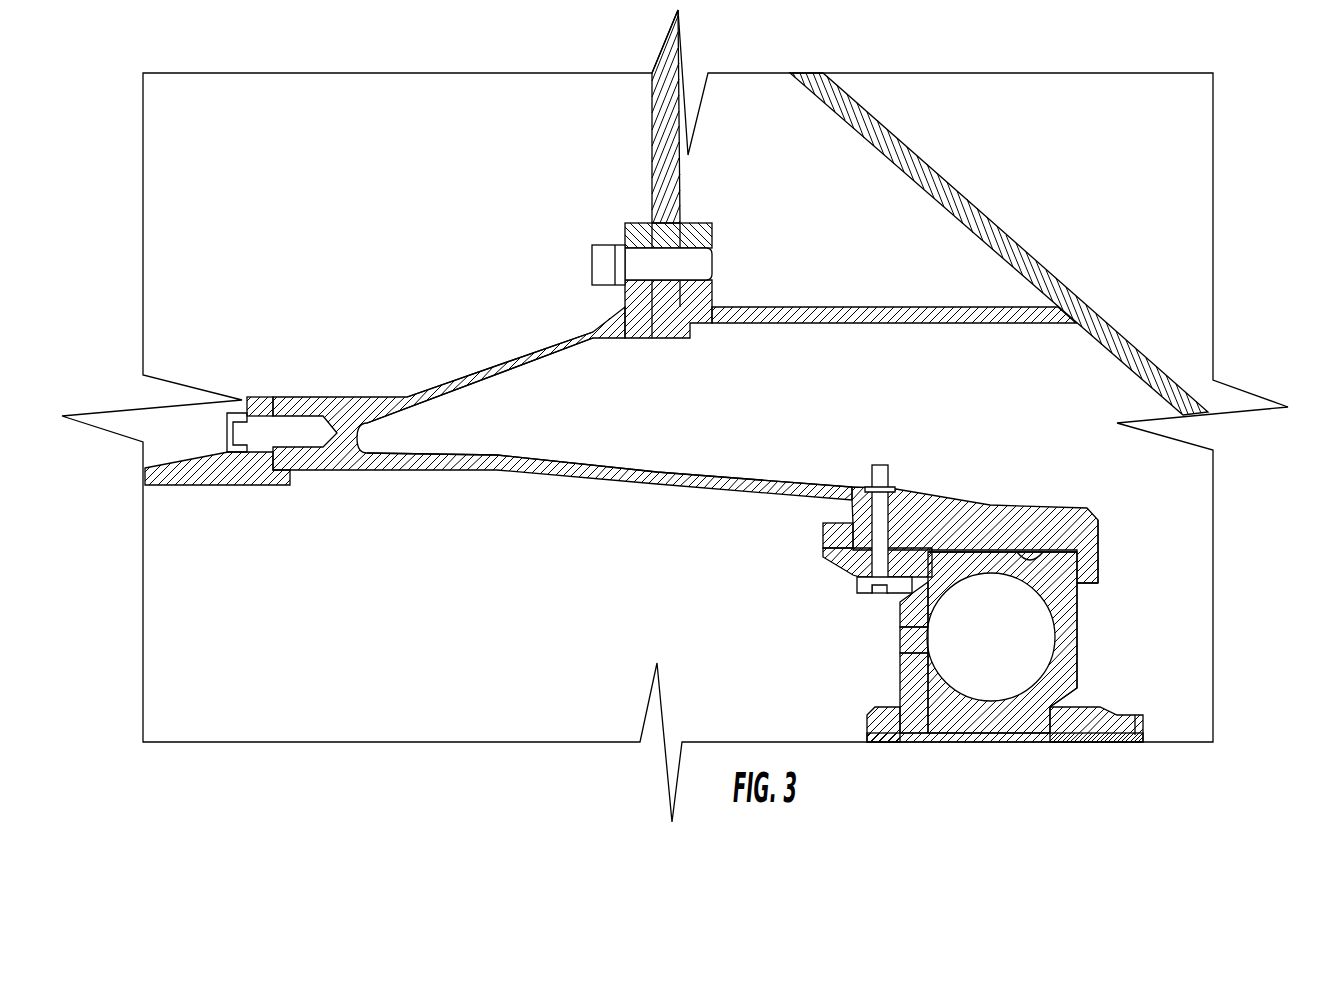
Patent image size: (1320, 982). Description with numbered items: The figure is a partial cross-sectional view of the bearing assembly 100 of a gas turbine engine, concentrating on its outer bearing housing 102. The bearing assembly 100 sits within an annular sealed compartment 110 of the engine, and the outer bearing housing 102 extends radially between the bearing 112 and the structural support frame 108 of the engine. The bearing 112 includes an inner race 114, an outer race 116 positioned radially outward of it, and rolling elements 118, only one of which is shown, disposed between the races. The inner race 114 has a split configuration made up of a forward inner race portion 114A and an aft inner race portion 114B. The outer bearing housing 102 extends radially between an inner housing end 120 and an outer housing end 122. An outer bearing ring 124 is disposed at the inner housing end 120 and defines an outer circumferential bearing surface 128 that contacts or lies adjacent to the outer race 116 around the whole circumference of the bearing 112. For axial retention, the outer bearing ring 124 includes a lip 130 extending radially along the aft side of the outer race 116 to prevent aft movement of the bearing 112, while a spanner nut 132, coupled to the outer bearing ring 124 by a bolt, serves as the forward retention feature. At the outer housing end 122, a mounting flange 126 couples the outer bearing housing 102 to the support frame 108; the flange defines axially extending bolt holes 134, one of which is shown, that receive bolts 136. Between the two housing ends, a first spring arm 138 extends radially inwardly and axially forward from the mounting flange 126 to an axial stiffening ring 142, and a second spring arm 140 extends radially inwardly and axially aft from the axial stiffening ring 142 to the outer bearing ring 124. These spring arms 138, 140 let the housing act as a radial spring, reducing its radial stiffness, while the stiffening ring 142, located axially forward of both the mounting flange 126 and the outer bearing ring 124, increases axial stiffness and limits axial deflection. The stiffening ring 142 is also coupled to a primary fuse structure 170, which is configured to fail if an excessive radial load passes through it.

The bearing assembly 100 is at (266, 205).
The outer bearing housing 102 is at (396, 504).
The structural support frame 108 is at (940, 178).
The sealed compartment 110 is at (343, 664).
The bearing 112 is at (896, 646).
The inner race 114 is at (896, 689).
The forward inner race portion 114A is at (945, 723).
The aft inner race portion 114B is at (1023, 723).
The outer race 116 is at (905, 610).
The rolling elements 118 is at (1003, 654).
The inner housing end 120 is at (1087, 588).
The outer housing end 122 is at (636, 224).
The outer bearing ring 124 is at (962, 513).
The mounting flange 126 is at (638, 297).
The outer circumferential bearing surface 128 is at (1023, 562).
The lip 130 is at (1090, 544).
The spanner nut 132 is at (852, 562).
The bolt holes 134 is at (625, 257).
The bolts 136 is at (698, 264).
The first spring arm 138 is at (462, 380).
The second spring arm 140 is at (597, 473).
The axial stiffening ring 142 is at (306, 398).
The primary fuse structure 170 is at (188, 483).